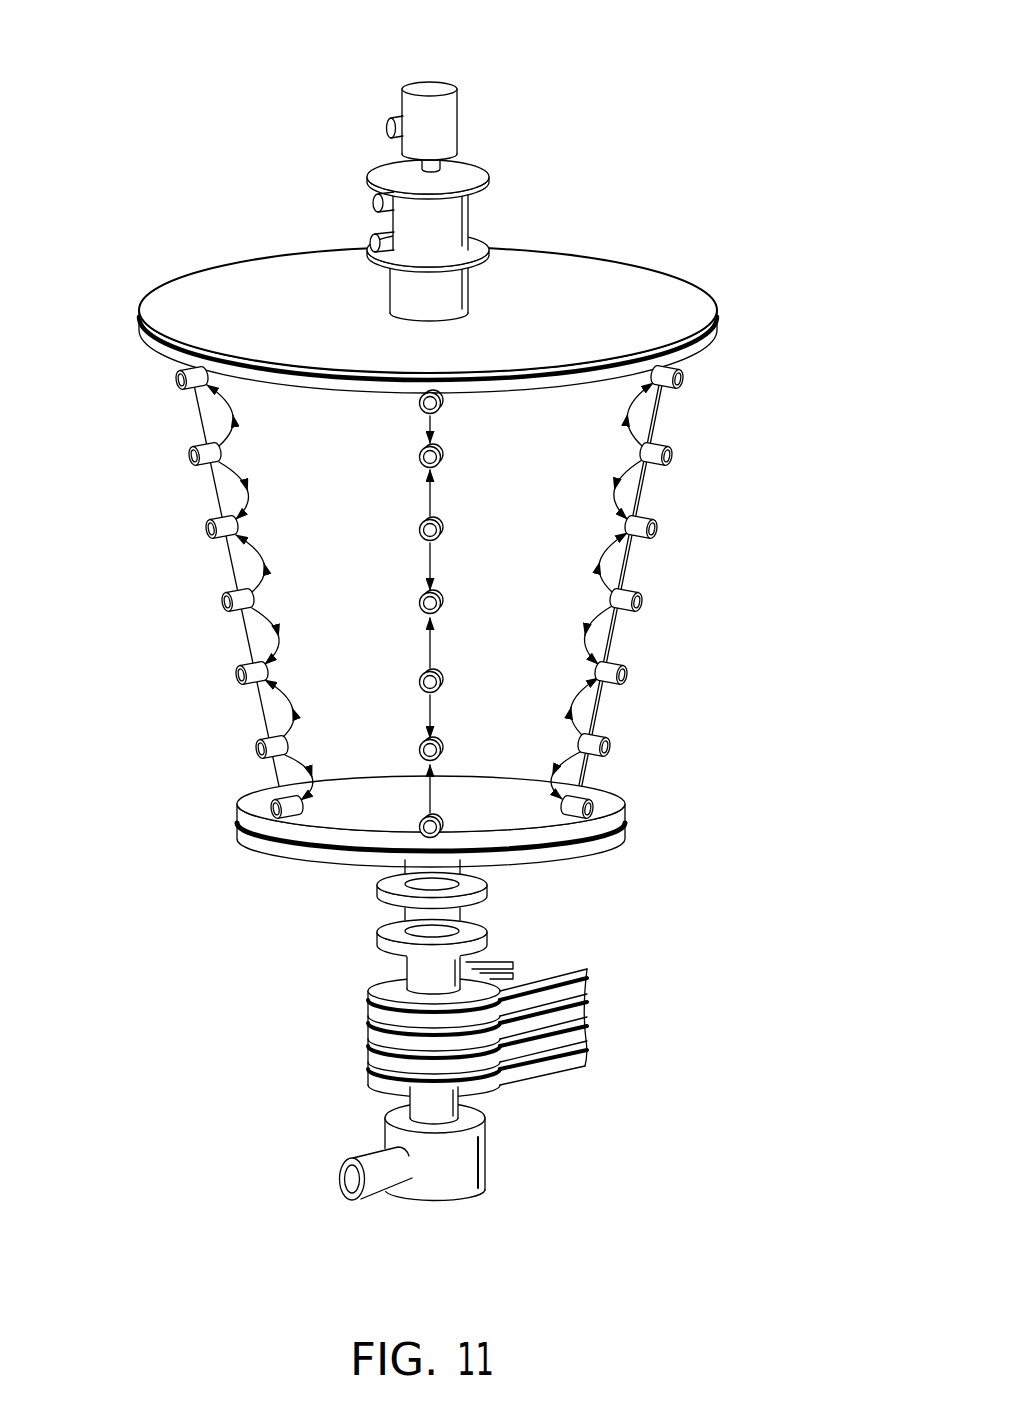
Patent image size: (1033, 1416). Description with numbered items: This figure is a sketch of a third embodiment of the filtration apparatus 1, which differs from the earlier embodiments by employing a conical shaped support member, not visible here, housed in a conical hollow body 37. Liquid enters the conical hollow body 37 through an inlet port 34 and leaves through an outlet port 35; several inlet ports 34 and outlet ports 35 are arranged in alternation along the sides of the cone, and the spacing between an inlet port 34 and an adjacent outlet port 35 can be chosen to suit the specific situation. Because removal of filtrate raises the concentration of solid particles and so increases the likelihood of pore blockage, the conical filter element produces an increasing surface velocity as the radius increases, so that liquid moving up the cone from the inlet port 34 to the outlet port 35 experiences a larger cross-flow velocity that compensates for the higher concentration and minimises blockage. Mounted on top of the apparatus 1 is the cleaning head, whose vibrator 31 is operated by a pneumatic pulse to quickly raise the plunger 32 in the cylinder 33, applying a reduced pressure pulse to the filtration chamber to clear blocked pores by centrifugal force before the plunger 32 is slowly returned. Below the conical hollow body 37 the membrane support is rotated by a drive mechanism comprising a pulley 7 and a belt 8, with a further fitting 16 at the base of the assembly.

The filtration apparatus 1 is at (670, 98).
The pulley 7 is at (390, 987).
The belt 8 is at (522, 1057).
The housing 16 is at (453, 1177).
The vibrator 31 is at (438, 125).
The plunger 32 is at (450, 228).
The cylinder 33 is at (450, 297).
The inlet port 34 is at (183, 460).
The outlet port 35 is at (172, 382).
The conical hollow body 37 is at (536, 569).